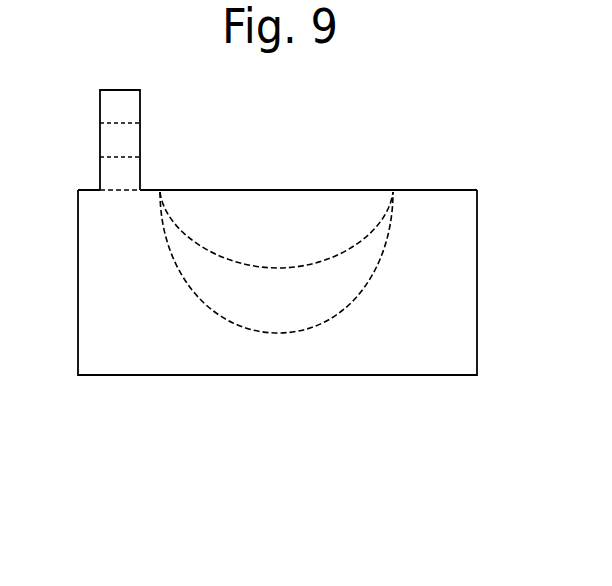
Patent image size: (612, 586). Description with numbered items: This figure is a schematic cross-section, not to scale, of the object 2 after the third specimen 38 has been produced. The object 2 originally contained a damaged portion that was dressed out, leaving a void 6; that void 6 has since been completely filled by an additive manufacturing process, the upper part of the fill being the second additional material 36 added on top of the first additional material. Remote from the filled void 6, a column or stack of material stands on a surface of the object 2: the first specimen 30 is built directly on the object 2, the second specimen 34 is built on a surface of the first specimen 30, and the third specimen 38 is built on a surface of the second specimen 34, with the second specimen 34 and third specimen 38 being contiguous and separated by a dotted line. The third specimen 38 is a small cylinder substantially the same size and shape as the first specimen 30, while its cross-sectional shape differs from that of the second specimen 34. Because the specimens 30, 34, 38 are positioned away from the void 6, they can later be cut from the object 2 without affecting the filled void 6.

The object 2 is at (438, 190).
The void 6 is at (280, 333).
The first specimen 30 is at (108, 175).
The second specimen 34 is at (108, 140).
The second additional material 36 is at (232, 189).
The third specimen 38 is at (112, 102).